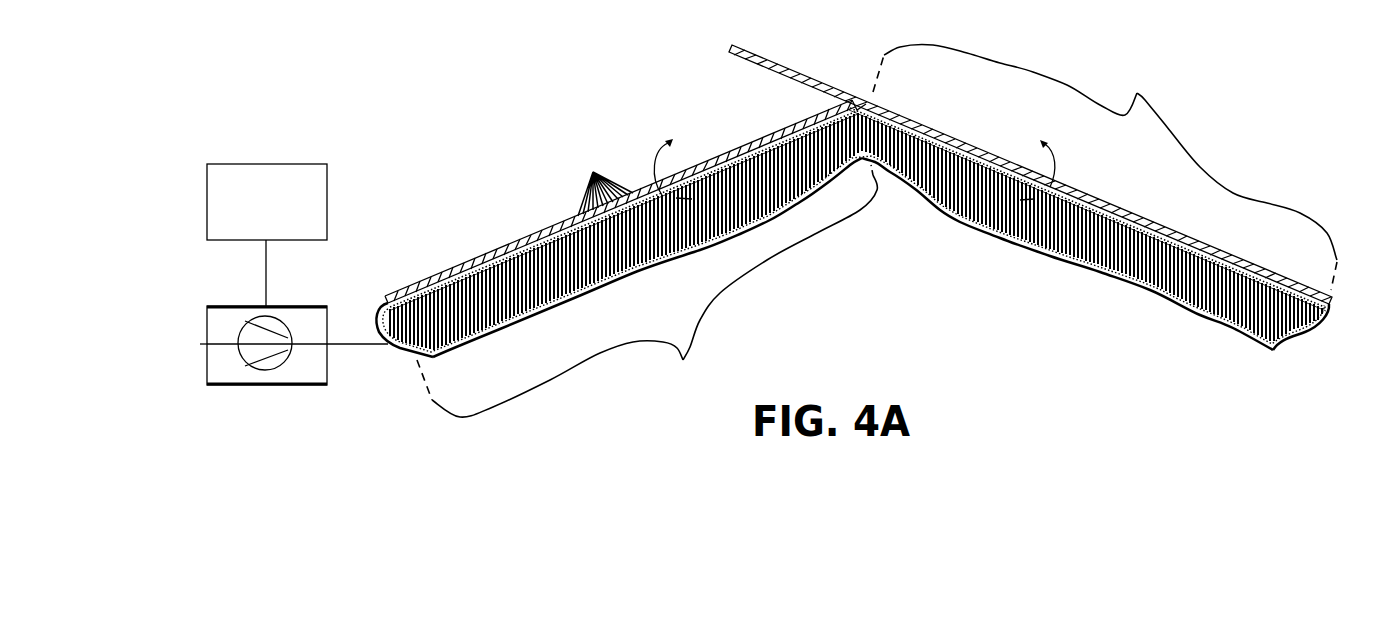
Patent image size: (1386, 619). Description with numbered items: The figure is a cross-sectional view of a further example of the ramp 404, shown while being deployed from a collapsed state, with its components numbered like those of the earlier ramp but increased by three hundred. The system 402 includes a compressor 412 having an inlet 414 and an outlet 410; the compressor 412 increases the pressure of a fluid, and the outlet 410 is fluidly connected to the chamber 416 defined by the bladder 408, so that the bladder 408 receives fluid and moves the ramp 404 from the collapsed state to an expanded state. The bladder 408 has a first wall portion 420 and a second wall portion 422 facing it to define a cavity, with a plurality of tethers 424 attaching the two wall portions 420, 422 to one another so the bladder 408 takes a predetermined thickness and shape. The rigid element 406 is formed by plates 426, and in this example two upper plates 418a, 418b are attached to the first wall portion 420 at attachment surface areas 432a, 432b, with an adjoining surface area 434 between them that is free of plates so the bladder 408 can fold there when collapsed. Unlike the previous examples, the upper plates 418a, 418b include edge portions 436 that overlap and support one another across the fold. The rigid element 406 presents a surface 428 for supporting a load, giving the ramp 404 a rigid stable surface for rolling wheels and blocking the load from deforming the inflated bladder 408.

The system 402 is at (186, 128).
The ramp 404 is at (416, 152).
The rigid element 406 is at (621, 205).
The bladder 408 is at (457, 344).
The outlet 410 is at (327, 343).
The compressor 412 is at (297, 304).
The inlet 414 is at (200, 345).
The chamber 416 is at (1233, 328).
The upper plate 418a is at (740, 148).
The upper plate 418b is at (1215, 243).
The first wall portion 420 is at (517, 244).
The second wall portion 422 is at (533, 301).
The tethers 424 is at (604, 179).
The plates 426 is at (858, 210).
The surface 428 is at (678, 196).
The attachment surface area 432a is at (683, 360).
The attachment surface area 432b is at (1138, 94).
The adjoining surface area 434 is at (857, 106).
The edge portions 436 is at (815, 90).